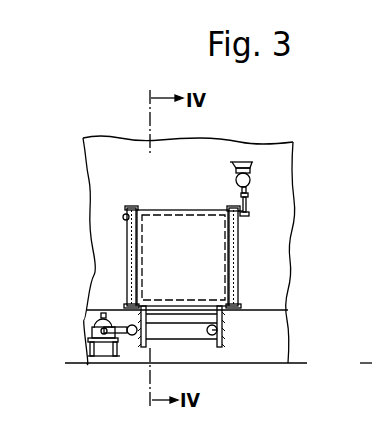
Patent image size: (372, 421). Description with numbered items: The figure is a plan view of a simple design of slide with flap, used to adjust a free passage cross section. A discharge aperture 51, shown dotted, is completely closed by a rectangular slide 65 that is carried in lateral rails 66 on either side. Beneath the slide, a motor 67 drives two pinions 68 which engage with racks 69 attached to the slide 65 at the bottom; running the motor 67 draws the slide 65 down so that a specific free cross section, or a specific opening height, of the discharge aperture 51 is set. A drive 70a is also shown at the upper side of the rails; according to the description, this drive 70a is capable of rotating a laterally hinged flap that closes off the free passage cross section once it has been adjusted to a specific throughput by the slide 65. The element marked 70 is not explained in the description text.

The discharge aperture 51 is at (185, 209).
The rectangular slide 65 is at (160, 255).
The lateral rails 66 is at (128, 288).
The motor 67 is at (103, 331).
The pinions 68 is at (130, 335).
The racks 69 is at (143, 348).
The limit switch 70 is at (125, 212).
The drive 70a is at (247, 164).